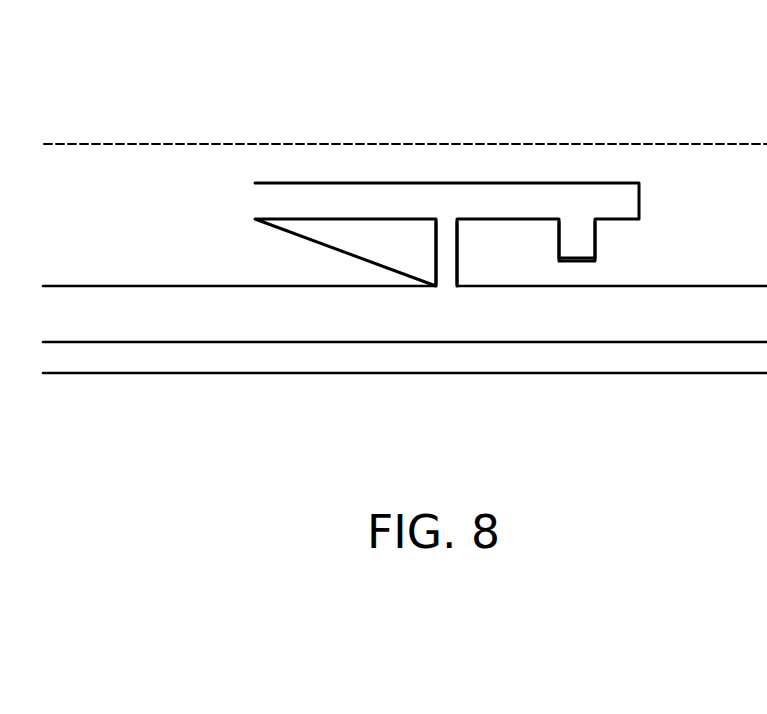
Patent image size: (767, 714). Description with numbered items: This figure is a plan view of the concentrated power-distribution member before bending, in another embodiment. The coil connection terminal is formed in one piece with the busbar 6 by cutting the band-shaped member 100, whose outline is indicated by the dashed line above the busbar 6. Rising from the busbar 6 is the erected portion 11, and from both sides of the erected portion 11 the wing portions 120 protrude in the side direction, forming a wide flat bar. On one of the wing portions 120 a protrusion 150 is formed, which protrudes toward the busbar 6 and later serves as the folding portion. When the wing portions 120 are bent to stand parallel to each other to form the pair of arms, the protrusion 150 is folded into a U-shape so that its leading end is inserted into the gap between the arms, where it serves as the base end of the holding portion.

The band-shaped member 100 is at (140, 143).
The busbar 6 is at (214, 285).
The wing portion 120 is at (533, 203).
The protrusion 150 is at (575, 242).
The erected portion 11 is at (443, 248).